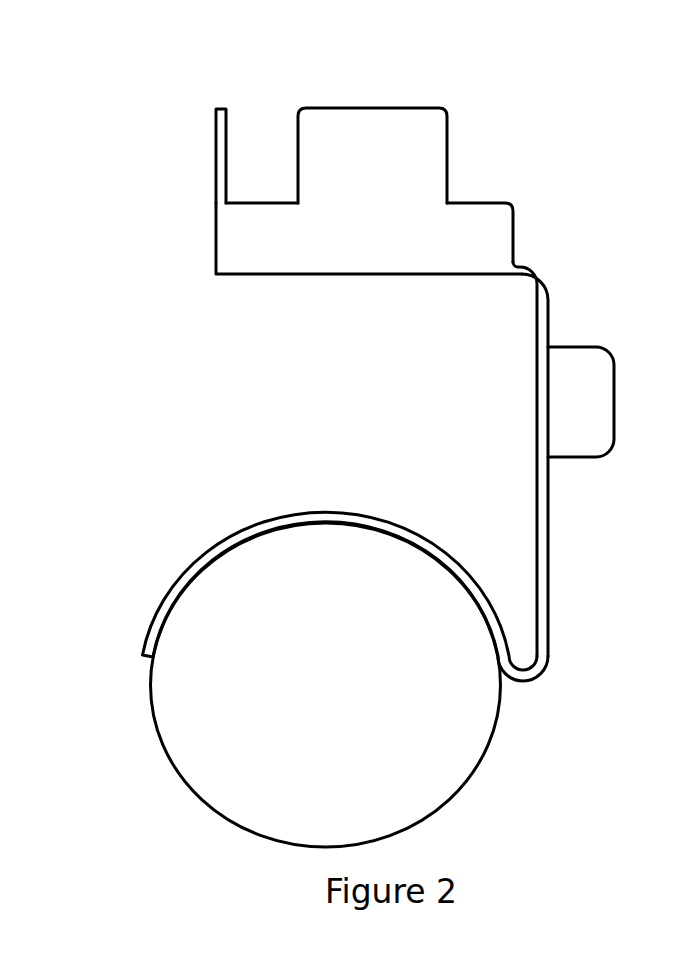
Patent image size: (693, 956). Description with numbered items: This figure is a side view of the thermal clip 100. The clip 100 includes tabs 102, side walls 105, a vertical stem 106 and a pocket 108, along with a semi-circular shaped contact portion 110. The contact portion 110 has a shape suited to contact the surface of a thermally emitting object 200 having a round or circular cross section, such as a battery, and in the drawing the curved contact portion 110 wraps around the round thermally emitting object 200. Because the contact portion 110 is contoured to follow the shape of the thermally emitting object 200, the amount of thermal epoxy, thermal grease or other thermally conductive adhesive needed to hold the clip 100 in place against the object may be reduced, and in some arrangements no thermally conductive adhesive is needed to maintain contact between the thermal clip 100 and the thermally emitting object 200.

The thermal clip 100 is at (180, 95).
The tabs 102 is at (388, 137).
The side walls 105 is at (468, 234).
The vertical stem 106 is at (540, 492).
The pocket 108 is at (581, 386).
The contact portion 110 is at (322, 512).
The thermally emitting object 200 is at (252, 795).